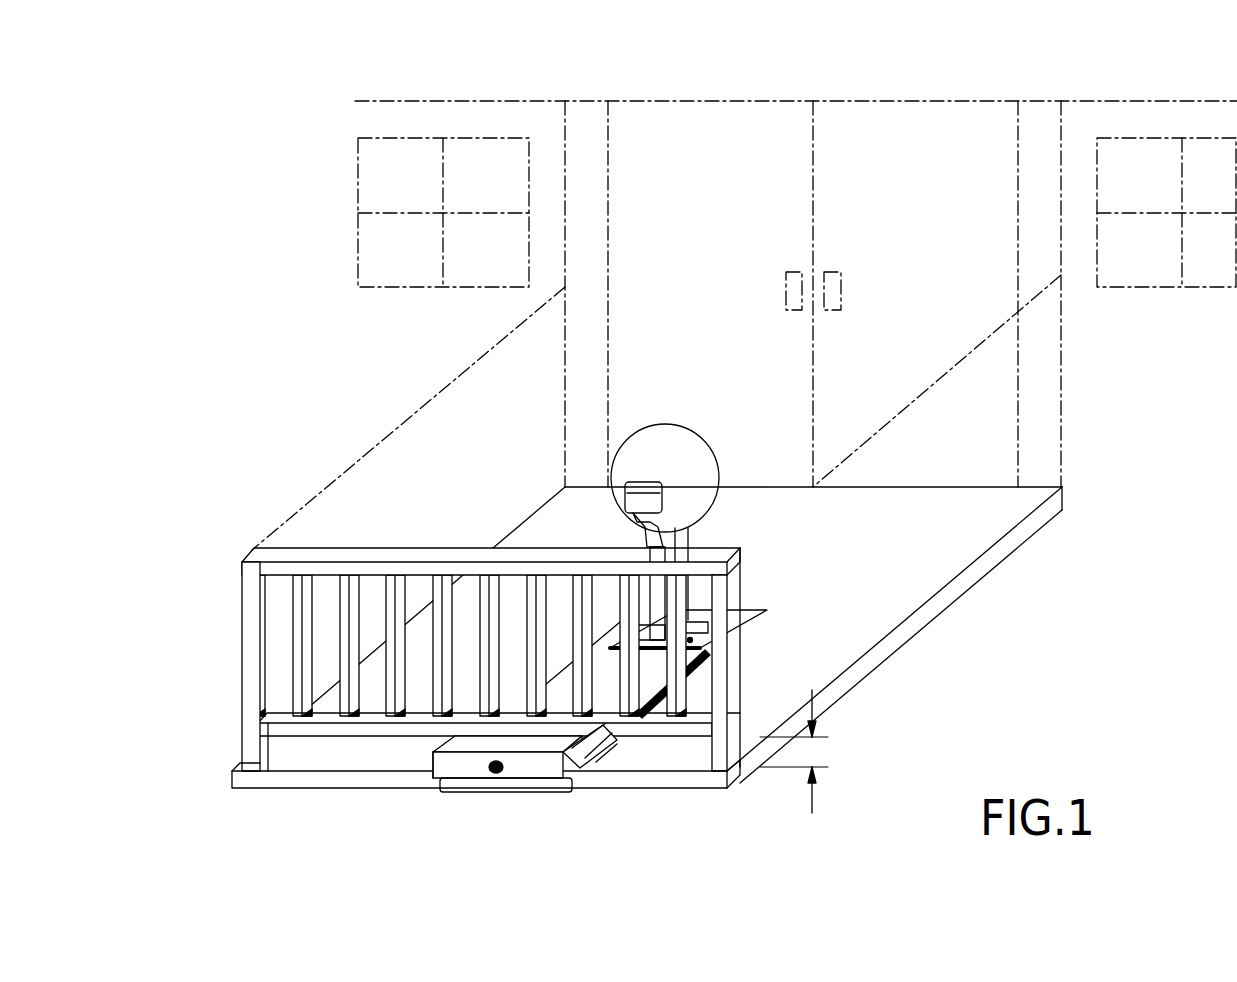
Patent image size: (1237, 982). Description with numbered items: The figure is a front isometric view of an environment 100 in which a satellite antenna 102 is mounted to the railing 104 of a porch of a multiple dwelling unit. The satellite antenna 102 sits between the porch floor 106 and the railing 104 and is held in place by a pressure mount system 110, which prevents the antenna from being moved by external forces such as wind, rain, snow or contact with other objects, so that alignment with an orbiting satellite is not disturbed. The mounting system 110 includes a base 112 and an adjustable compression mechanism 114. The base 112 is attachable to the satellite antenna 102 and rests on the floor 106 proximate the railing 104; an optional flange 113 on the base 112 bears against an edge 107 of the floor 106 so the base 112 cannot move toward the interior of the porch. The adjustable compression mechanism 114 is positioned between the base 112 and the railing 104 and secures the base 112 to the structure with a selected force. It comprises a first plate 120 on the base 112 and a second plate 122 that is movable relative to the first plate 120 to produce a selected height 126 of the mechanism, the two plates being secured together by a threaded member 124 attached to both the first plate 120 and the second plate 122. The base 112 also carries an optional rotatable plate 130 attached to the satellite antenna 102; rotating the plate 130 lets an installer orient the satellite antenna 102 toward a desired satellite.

The environment 100 is at (244, 201).
The satellite antenna 102 is at (683, 447).
The railing 104 is at (242, 593).
The floor 106 is at (970, 528).
The edge 107 is at (278, 780).
The pressure mount system 110 is at (572, 795).
The base 112 is at (707, 643).
The flange 113 is at (573, 776).
The adjustable compression mechanism 114 is at (605, 752).
The first plate 120 is at (432, 773).
The second plate 122 is at (590, 727).
The threaded member 124 is at (488, 766).
The selected height 126 is at (815, 753).
The rotatable plate 130 is at (643, 636).